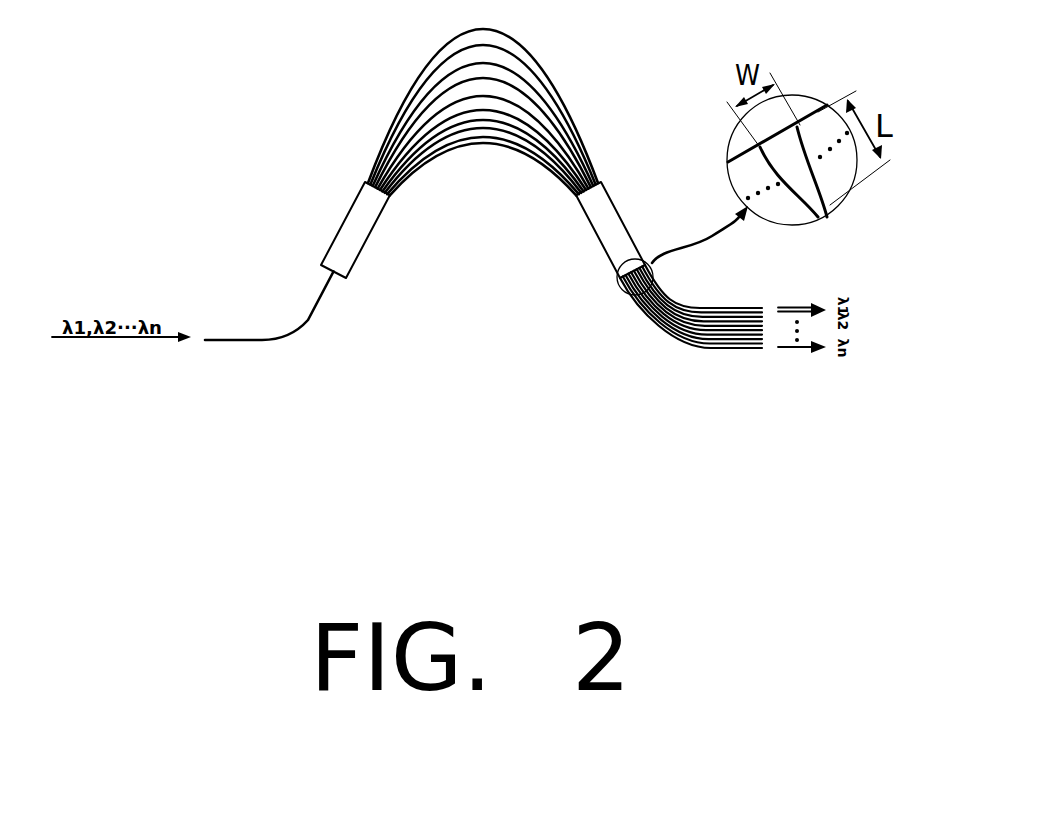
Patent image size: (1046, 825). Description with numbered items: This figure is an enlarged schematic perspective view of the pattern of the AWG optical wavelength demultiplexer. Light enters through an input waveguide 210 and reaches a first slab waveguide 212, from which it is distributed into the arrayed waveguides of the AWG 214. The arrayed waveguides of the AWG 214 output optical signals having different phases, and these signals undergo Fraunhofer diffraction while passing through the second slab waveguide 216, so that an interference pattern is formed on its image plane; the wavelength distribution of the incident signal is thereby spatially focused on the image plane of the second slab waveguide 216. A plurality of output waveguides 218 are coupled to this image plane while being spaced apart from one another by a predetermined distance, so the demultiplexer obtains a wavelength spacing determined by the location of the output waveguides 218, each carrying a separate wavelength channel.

The input optical fiber 210 is at (298, 323).
The first fiber block (fused region) 212 is at (357, 220).
The arrayed waveguide grating 214 is at (560, 197).
The second slab waveguide 216 is at (612, 220).
The output waveguides 218 is at (672, 333).